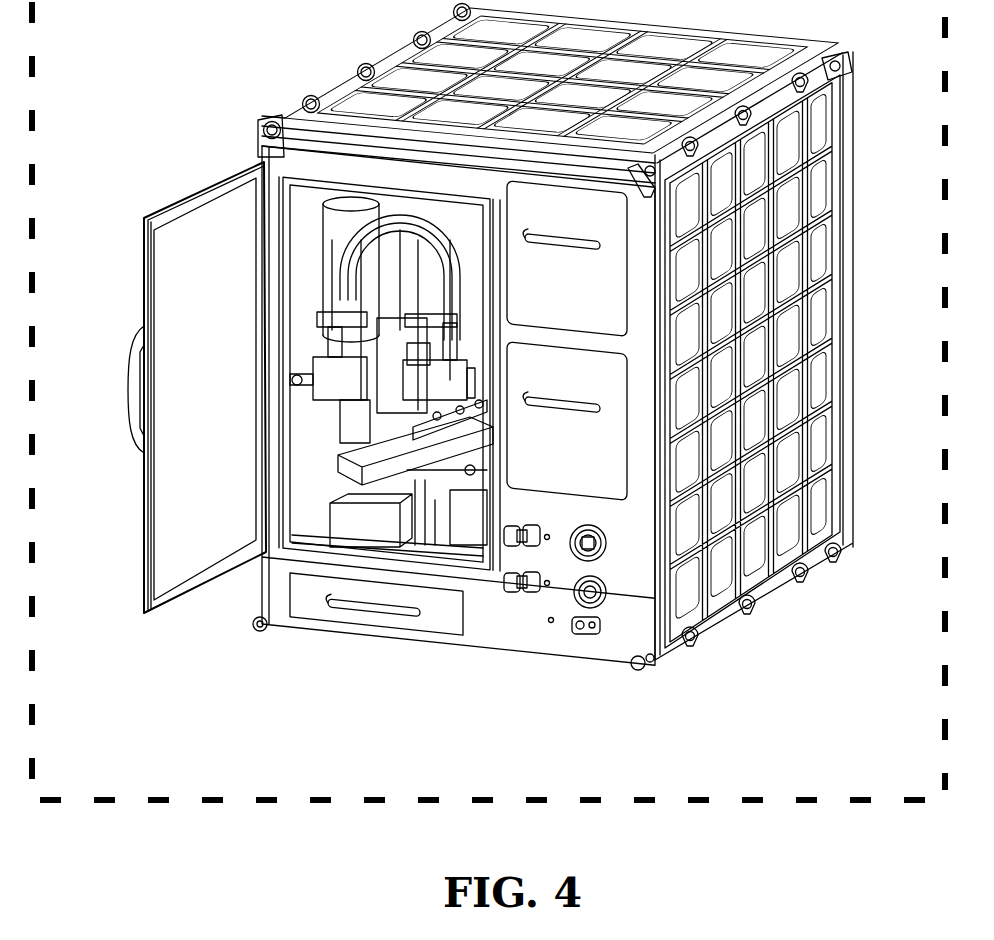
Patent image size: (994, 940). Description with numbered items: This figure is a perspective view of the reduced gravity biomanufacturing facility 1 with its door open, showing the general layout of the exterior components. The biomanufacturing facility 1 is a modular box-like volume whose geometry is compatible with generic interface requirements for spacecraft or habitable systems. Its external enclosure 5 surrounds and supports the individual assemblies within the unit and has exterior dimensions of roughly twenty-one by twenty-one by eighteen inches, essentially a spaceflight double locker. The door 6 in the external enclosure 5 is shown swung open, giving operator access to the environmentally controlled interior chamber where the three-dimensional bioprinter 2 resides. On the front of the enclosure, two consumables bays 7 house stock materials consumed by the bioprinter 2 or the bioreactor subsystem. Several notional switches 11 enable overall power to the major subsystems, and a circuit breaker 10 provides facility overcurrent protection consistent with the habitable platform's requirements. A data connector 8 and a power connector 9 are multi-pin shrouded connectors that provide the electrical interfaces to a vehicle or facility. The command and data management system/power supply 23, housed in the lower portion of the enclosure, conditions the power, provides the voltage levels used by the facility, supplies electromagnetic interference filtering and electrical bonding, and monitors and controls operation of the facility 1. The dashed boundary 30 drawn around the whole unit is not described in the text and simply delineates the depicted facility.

The biomanufacturing facility 1 is at (210, 688).
The 3D bioprinter 2 is at (398, 345).
The external enclosure 5 is at (347, 83).
The door 6 is at (170, 212).
The consumables bays 7 is at (578, 288).
The data connector 8 is at (606, 543).
The power connector 9 is at (610, 593).
The circuit breaker 10 is at (586, 632).
The switches 11 is at (502, 543).
The command and data management system/power supply 23 is at (362, 617).
The enclosure boundary 30 is at (260, 805).